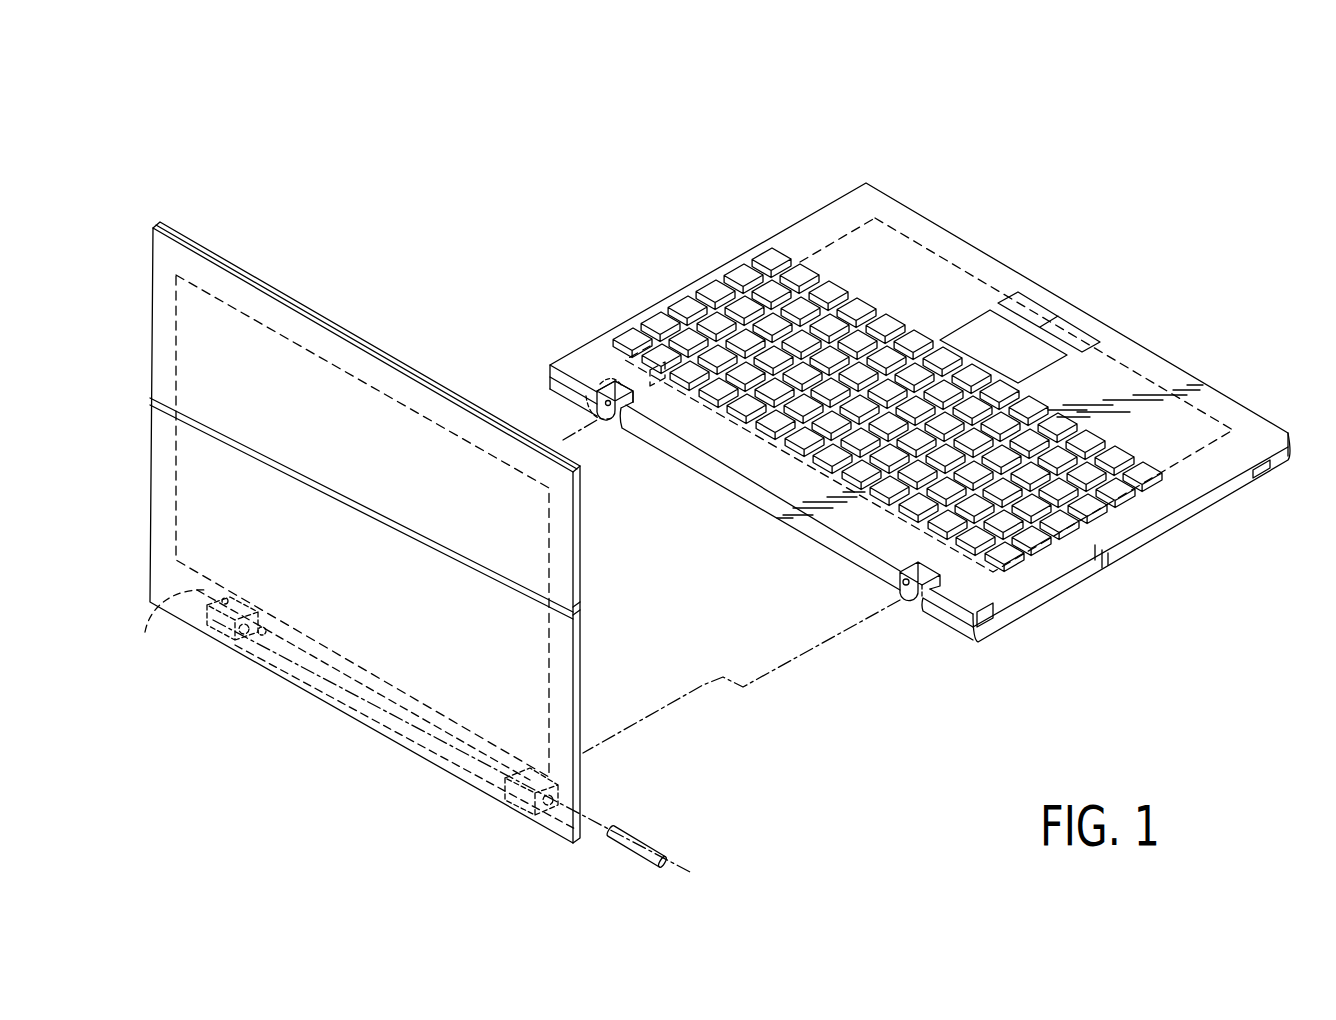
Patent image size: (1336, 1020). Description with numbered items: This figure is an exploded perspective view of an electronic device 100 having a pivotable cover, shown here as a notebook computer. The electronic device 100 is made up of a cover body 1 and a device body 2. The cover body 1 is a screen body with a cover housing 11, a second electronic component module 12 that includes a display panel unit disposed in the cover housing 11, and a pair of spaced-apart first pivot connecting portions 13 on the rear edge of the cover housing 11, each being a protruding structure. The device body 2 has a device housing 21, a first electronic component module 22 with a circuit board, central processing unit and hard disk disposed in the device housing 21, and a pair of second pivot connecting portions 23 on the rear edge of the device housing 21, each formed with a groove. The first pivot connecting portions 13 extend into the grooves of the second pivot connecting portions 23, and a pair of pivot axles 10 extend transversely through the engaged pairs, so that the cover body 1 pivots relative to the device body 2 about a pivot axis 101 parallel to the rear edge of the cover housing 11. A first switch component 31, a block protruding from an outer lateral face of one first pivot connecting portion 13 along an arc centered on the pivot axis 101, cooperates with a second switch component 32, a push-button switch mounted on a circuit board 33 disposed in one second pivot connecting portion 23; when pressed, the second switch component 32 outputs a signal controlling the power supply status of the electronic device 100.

The electronic device 100 is at (610, 247).
The cover body 1 is at (346, 292).
The cover housing 11 is at (412, 377).
The second electronic component module 12 is at (228, 300).
The first pivot connecting portions 13 is at (243, 640).
The pivot axles 10 is at (262, 633).
The pivot axis 101 is at (678, 866).
The first switch component 31 is at (357, 710).
The device body 2 is at (818, 192).
The device housing 21 is at (953, 255).
The first electronic component module 22 is at (823, 257).
The second pivot connecting portions 23 is at (603, 392).
The second switch component 32 is at (597, 387).
The circuit board 33 is at (596, 413).